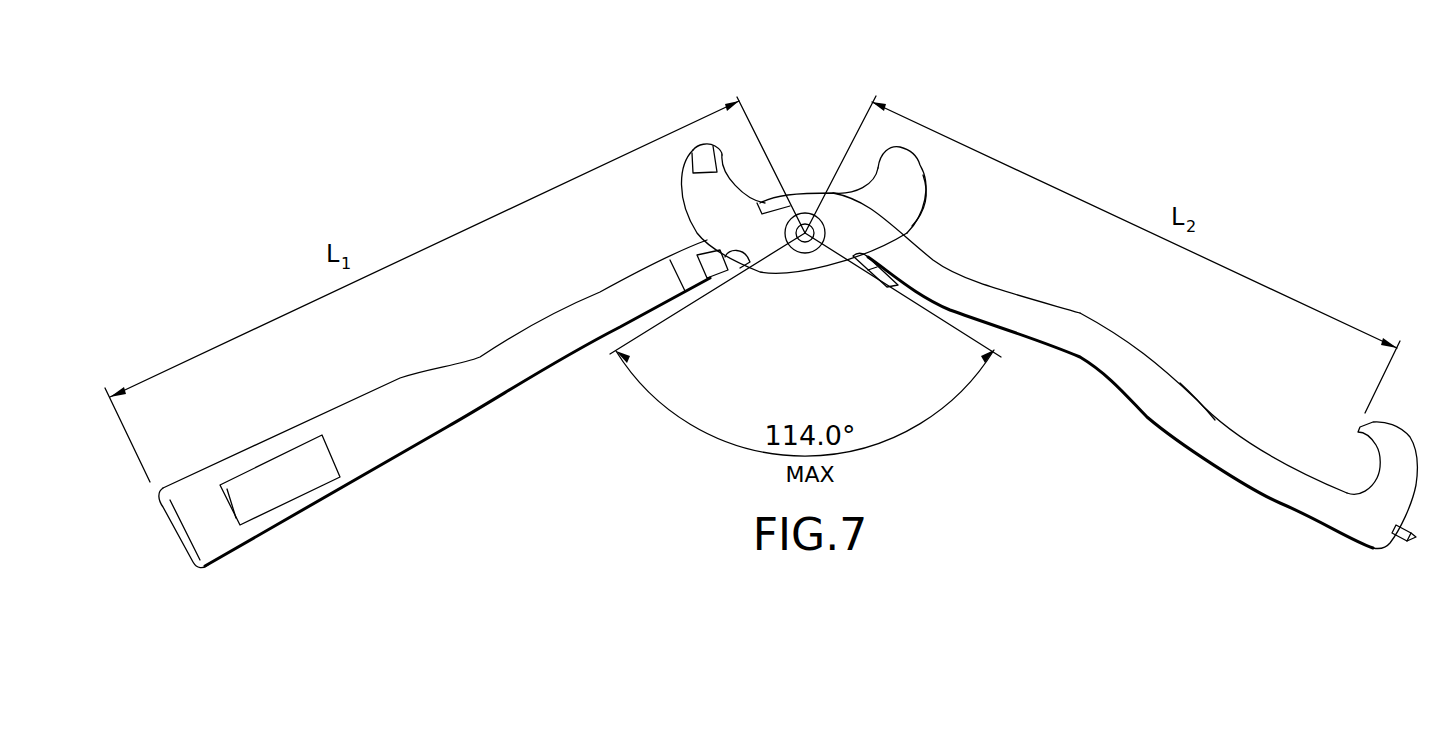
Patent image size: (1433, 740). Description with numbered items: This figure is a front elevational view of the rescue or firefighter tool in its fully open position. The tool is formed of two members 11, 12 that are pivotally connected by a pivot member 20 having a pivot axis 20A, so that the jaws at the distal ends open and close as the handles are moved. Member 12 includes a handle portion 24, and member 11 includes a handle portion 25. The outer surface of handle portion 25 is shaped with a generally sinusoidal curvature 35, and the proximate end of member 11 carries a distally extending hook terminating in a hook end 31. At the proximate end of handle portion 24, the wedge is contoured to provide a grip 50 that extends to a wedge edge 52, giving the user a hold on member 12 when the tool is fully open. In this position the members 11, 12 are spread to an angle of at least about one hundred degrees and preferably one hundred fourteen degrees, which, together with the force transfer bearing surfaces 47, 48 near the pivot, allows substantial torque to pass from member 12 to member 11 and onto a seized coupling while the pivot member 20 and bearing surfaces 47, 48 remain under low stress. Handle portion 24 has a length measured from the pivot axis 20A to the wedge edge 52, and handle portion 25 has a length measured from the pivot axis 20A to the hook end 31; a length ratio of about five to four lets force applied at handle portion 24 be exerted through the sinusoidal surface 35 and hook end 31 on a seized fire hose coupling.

The member 11 is at (1157, 362).
The member 12 is at (423, 368).
The pivot member 20 is at (820, 230).
The pivot axis 20A is at (805, 233).
The handle portion 24 is at (437, 427).
The handle portion 25 is at (1218, 463).
The hook end 31 is at (1357, 434).
The sinusoidal curvature 35 is at (1198, 400).
The force transfer bearing surface 47 is at (690, 262).
The force transfer bearing surface 48 is at (760, 263).
The grip 50 is at (300, 515).
The wedge edge 52 is at (190, 548).